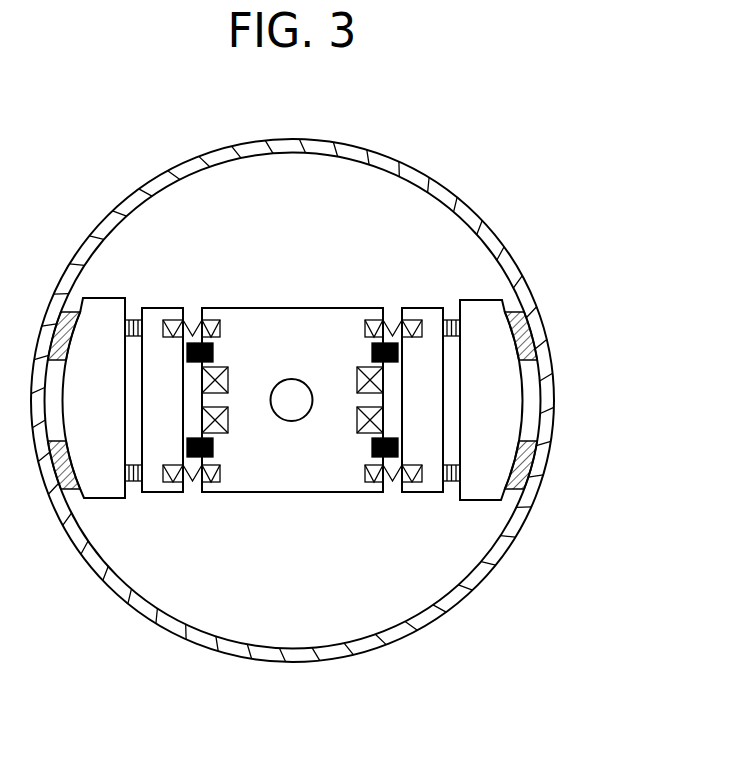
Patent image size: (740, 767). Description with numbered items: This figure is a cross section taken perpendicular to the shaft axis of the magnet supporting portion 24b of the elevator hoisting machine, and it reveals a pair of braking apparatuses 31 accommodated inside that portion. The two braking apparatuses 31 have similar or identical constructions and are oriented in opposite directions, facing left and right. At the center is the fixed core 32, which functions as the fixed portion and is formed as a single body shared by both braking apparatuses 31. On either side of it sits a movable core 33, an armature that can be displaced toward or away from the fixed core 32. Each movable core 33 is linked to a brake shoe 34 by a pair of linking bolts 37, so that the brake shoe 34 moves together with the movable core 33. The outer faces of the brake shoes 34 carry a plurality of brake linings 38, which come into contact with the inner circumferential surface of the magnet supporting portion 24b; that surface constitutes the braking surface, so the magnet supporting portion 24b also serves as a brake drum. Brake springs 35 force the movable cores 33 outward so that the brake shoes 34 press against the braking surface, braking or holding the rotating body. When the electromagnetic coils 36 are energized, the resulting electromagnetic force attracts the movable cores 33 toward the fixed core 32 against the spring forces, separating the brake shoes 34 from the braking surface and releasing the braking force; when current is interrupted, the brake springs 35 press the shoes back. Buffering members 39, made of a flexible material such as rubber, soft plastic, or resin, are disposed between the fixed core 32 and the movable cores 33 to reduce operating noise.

The magnet supporting portion 24b is at (457, 210).
The braking apparatus 31 is at (335, 400).
The fixed core 32 is at (318, 308).
The movable core 33 is at (418, 308).
The brake shoe 34 is at (478, 492).
The brake spring 35 is at (393, 482).
The electromagnetic coil 36 is at (357, 422).
The linking bolt 37 is at (450, 483).
The brake lining 38 is at (523, 470).
The buffering member 39 is at (372, 455).